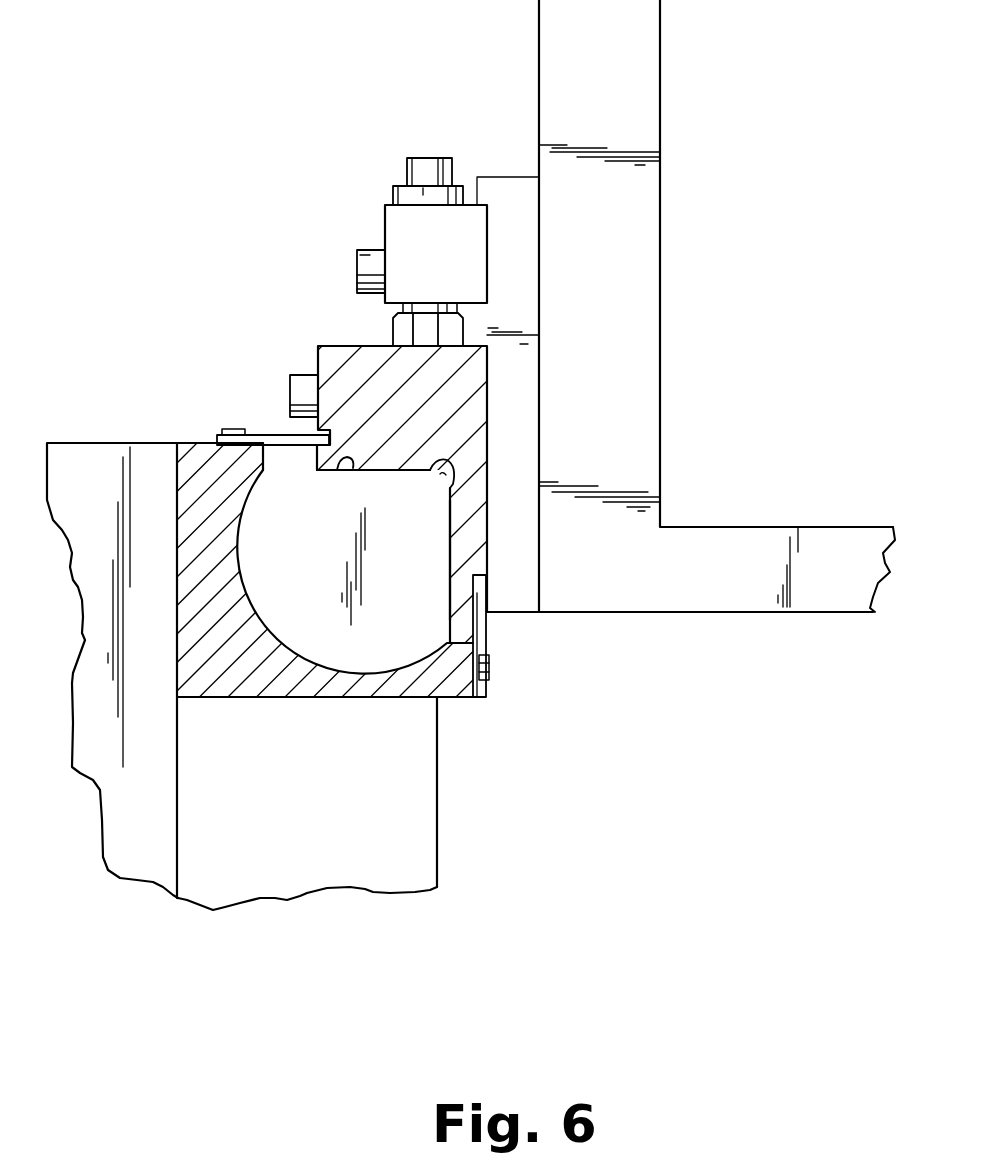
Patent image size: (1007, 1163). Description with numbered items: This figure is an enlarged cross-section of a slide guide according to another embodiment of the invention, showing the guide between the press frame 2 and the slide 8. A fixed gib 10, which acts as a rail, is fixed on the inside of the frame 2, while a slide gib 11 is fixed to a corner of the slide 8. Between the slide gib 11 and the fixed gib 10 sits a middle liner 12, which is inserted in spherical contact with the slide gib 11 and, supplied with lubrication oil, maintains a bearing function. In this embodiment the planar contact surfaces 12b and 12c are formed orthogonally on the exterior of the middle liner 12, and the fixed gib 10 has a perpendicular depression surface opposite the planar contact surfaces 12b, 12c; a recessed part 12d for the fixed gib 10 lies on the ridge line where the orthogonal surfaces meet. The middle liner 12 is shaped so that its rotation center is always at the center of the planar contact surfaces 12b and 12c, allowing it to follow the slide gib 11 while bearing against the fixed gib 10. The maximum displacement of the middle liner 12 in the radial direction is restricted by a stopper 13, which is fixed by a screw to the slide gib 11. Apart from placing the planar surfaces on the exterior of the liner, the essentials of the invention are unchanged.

The frame 2 is at (633, 395).
The slide 8 is at (90, 457).
The fixed gib 10 is at (350, 373).
The slide gib 11 is at (207, 667).
The middle liner 12 is at (373, 627).
The planar contact surface 12b is at (338, 468).
The planar contact surface 12c is at (453, 558).
The recessed part 12d is at (438, 475).
The stopper 13 is at (277, 440).